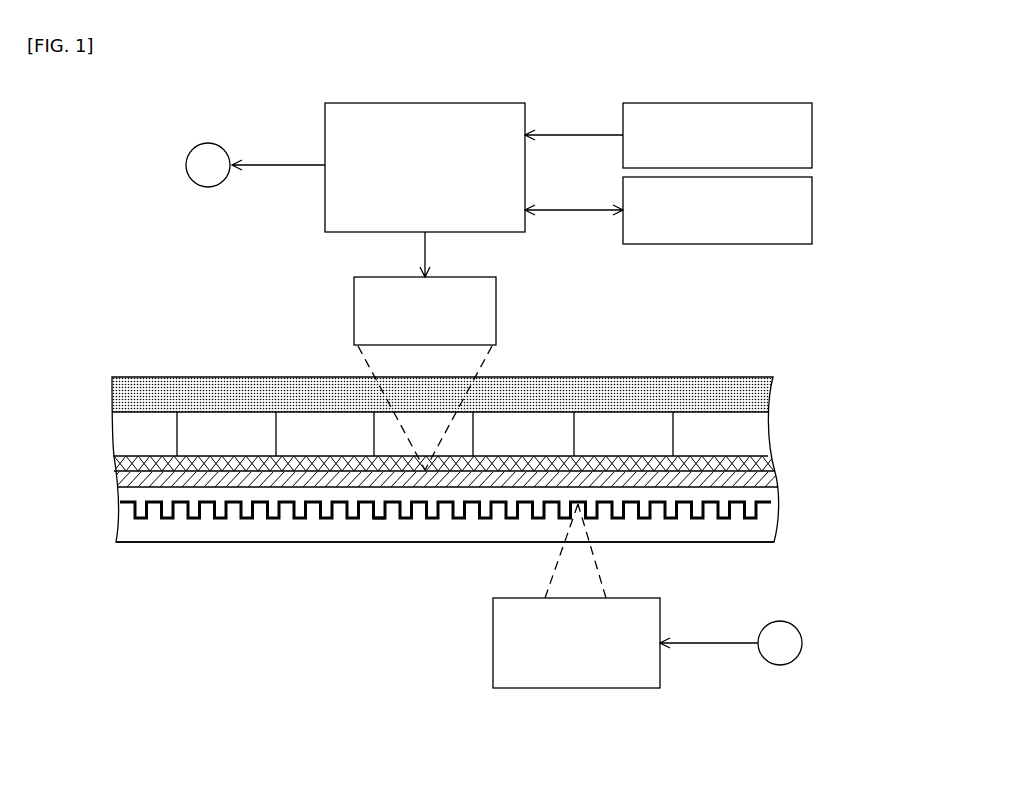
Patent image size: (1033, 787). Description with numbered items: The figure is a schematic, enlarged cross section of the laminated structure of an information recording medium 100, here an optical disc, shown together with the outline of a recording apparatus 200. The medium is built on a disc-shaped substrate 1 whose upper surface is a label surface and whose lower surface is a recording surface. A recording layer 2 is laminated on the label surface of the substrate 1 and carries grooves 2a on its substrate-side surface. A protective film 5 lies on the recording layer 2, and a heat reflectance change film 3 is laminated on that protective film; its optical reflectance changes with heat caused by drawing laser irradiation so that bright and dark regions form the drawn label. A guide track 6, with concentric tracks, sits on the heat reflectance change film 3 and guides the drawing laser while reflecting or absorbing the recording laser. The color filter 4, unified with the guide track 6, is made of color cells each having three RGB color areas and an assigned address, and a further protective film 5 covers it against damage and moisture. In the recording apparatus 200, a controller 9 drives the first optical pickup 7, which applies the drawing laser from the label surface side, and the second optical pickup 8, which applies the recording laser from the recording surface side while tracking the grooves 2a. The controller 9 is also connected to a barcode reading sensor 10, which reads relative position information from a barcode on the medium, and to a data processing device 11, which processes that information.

The information recording medium 100 is at (131, 350).
The recording apparatus 200 is at (843, 88).
The substrate 1 is at (290, 543).
The recording layer 2 is at (120, 499).
The grooves 2a is at (378, 519).
The heat reflectance change film 3 is at (775, 478).
The color filter 4 is at (768, 436).
The protective films 5 is at (770, 395).
The guide track 6 is at (113, 458).
The first optical pickup 7 is at (496, 298).
The second optical pickup 8 is at (493, 645).
The controller 9 is at (325, 205).
The barcode reading sensor 10 is at (812, 137).
The data processing device 11 is at (812, 210).